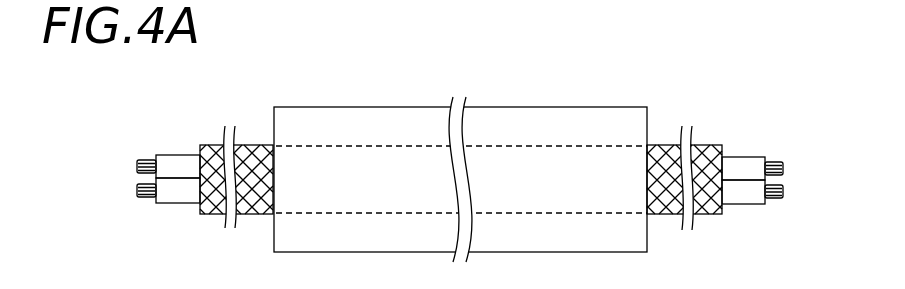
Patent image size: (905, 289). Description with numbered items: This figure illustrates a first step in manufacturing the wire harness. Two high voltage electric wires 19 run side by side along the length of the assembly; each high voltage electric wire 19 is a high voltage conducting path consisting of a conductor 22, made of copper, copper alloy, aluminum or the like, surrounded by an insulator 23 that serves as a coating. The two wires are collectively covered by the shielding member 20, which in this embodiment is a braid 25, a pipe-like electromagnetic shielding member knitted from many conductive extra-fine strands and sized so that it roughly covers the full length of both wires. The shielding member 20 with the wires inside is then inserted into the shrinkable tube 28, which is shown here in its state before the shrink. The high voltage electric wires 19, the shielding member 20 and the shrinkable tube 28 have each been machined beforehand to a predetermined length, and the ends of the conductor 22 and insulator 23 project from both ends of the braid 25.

The high voltage electric wire 19 is at (174, 160).
The shielding member 20 is at (255, 145).
The conductor 22 is at (776, 162).
The insulator 23 is at (743, 158).
The braid 25 is at (672, 146).
The shrinkable tube 28 is at (562, 125).